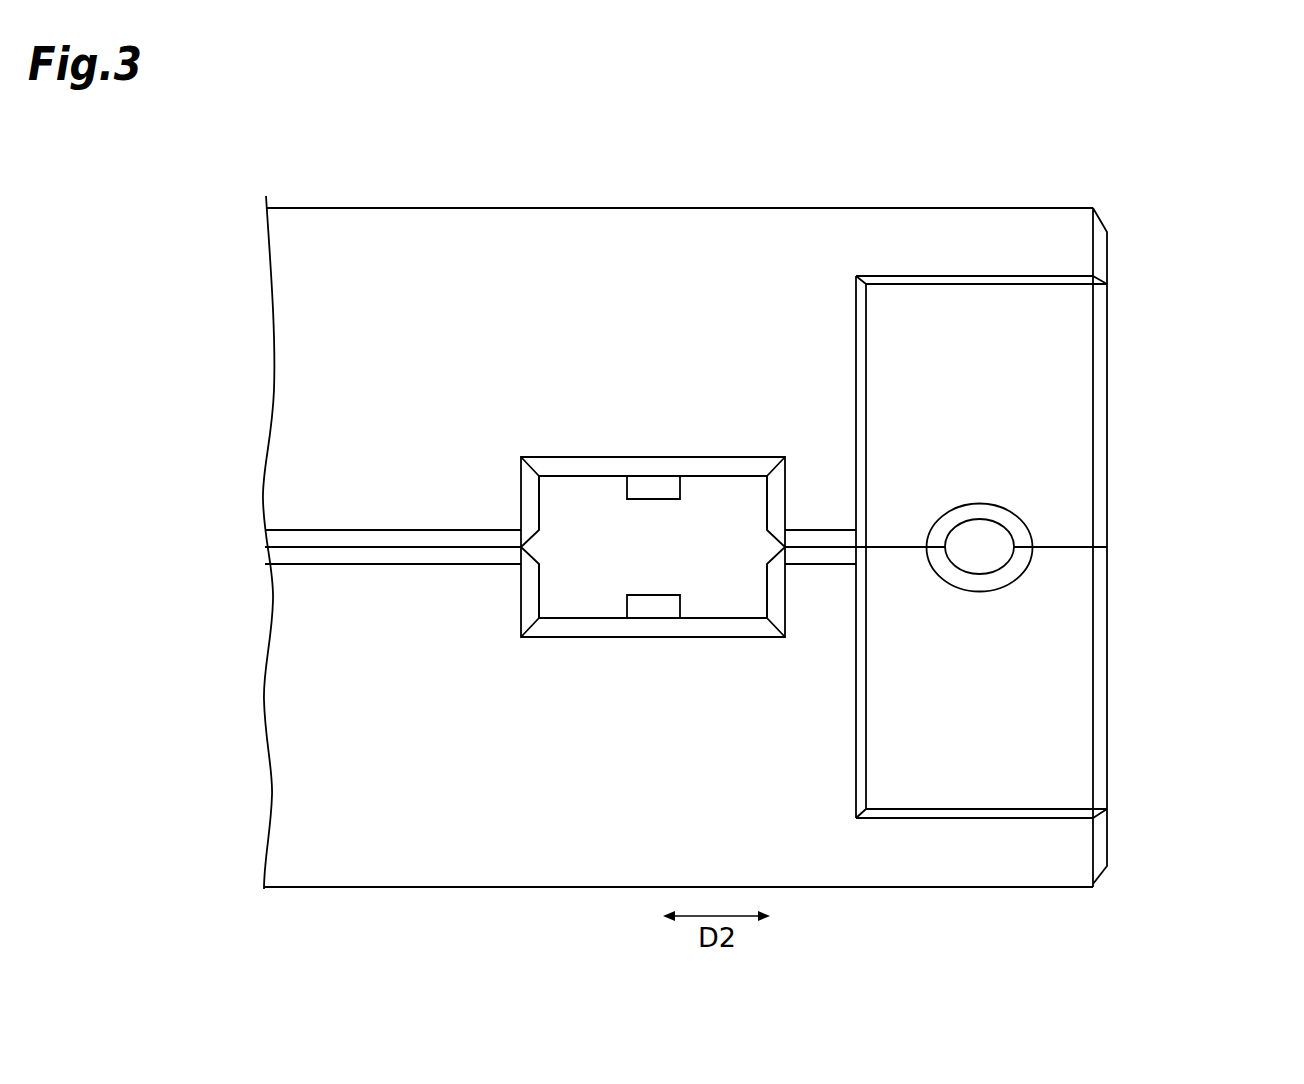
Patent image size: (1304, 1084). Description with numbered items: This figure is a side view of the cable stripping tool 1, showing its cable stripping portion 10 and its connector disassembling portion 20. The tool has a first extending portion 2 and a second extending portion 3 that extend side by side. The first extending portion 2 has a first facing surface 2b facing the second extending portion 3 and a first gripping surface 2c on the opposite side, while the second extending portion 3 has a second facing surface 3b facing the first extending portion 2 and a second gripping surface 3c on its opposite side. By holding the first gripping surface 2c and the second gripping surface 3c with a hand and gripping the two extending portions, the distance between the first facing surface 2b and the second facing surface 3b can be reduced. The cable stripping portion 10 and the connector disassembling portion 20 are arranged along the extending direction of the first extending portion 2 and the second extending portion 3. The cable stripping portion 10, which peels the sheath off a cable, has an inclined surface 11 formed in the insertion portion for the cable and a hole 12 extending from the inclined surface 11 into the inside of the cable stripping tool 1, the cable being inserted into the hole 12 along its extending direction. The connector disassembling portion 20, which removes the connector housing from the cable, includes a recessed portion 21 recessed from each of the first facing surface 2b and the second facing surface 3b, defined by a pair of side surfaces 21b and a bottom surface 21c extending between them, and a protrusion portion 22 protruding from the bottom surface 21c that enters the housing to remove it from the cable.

The cable stripping tool 1 is at (1218, 157).
The first extending portion 2 is at (463, 262).
The first facing surface 2b is at (414, 547).
The first gripping surface 2c is at (597, 208).
The second extending portion 3 is at (443, 826).
The second facing surface 3b is at (380, 547).
The second gripping surface 3c is at (558, 887).
The cable stripping portion 10 is at (995, 474).
The inclined surface 11 is at (1017, 524).
The hole 12 is at (1000, 527).
The connector disassembling portion 20 is at (700, 432).
The recessed portion 21 is at (702, 487).
The side surfaces 21b is at (538, 507).
The bottom surface 21c is at (575, 478).
The protrusion portion 22 is at (648, 483).